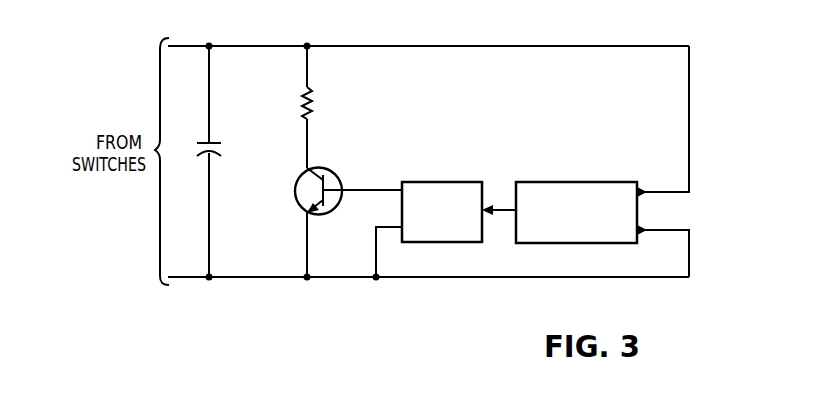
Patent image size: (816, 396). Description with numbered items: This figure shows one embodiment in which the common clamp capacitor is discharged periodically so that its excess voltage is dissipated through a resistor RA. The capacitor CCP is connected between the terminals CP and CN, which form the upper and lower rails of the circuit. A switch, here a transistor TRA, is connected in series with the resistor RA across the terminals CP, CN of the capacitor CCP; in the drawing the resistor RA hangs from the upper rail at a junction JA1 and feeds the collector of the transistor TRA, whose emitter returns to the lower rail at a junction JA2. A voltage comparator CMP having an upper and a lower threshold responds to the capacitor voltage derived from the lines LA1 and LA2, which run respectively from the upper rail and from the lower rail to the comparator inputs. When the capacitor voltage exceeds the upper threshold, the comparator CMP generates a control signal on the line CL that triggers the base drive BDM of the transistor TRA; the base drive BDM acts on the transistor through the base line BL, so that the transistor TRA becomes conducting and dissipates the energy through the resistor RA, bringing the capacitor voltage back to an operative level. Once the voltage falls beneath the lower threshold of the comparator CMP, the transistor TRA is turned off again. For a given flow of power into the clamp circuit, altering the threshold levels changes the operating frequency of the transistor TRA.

The terminal CP is at (209, 45).
The terminal CN is at (209, 278).
The capacitor CCP is at (216, 151).
The junction JA1 is at (307, 45).
The junction JA2 is at (307, 279).
The resistor RA is at (313, 92).
The transistor TRA is at (295, 191).
The base line BL is at (360, 188).
The base drive BDM is at (437, 181).
The line CL is at (495, 213).
The voltage comparator CMP is at (560, 181).
The line LA1 is at (625, 47).
The line LA2 is at (689, 262).